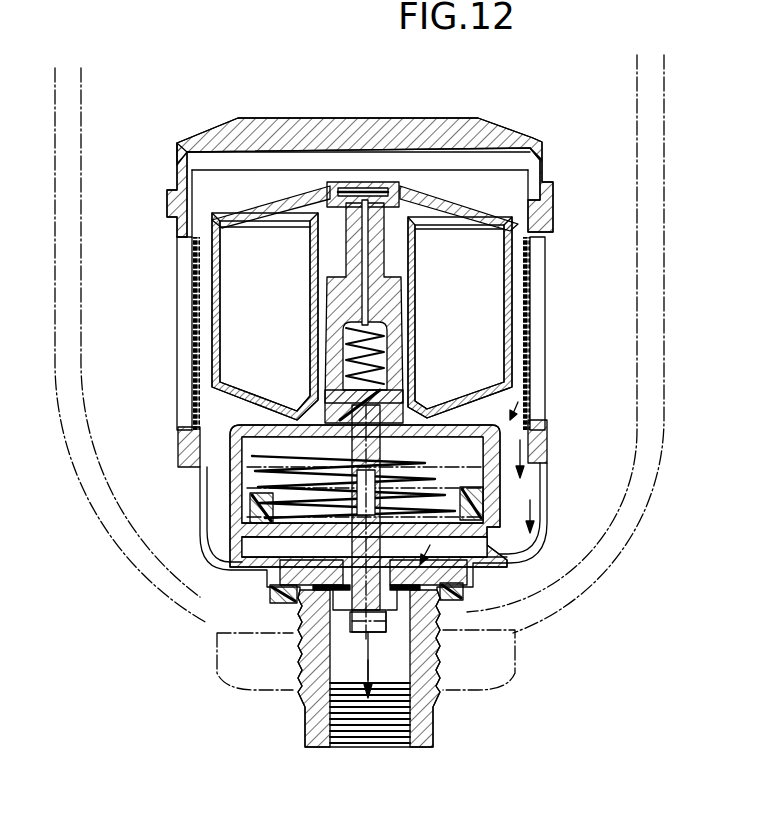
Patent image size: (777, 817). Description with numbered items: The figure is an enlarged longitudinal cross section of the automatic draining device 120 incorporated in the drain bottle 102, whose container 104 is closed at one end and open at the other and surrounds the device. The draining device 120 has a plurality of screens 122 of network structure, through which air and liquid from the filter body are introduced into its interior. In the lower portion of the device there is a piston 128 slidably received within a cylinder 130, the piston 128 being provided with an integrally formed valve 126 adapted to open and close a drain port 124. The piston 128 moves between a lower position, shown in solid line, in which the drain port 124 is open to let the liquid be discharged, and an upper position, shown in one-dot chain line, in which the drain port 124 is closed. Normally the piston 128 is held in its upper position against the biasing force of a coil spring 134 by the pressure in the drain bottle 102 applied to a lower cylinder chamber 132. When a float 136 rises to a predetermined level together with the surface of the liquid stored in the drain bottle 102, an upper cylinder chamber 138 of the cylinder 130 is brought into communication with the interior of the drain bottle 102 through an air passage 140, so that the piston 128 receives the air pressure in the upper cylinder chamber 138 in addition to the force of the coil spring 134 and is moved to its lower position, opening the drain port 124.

The drain bottle 102 is at (627, 562).
The container 104 is at (376, 377).
The automatic draining device 120 is at (248, 86).
The screens 122 is at (195, 277).
The drain port 124 is at (257, 540).
The valve 126 is at (347, 629).
The piston 128 is at (355, 560).
The cylinder 130 is at (222, 451).
The lower cylinder chamber 132 is at (452, 570).
The coil spring 134 is at (427, 460).
The float 136 is at (517, 264).
The upper cylinder chamber 138 is at (258, 453).
The air passage 140 is at (322, 210).